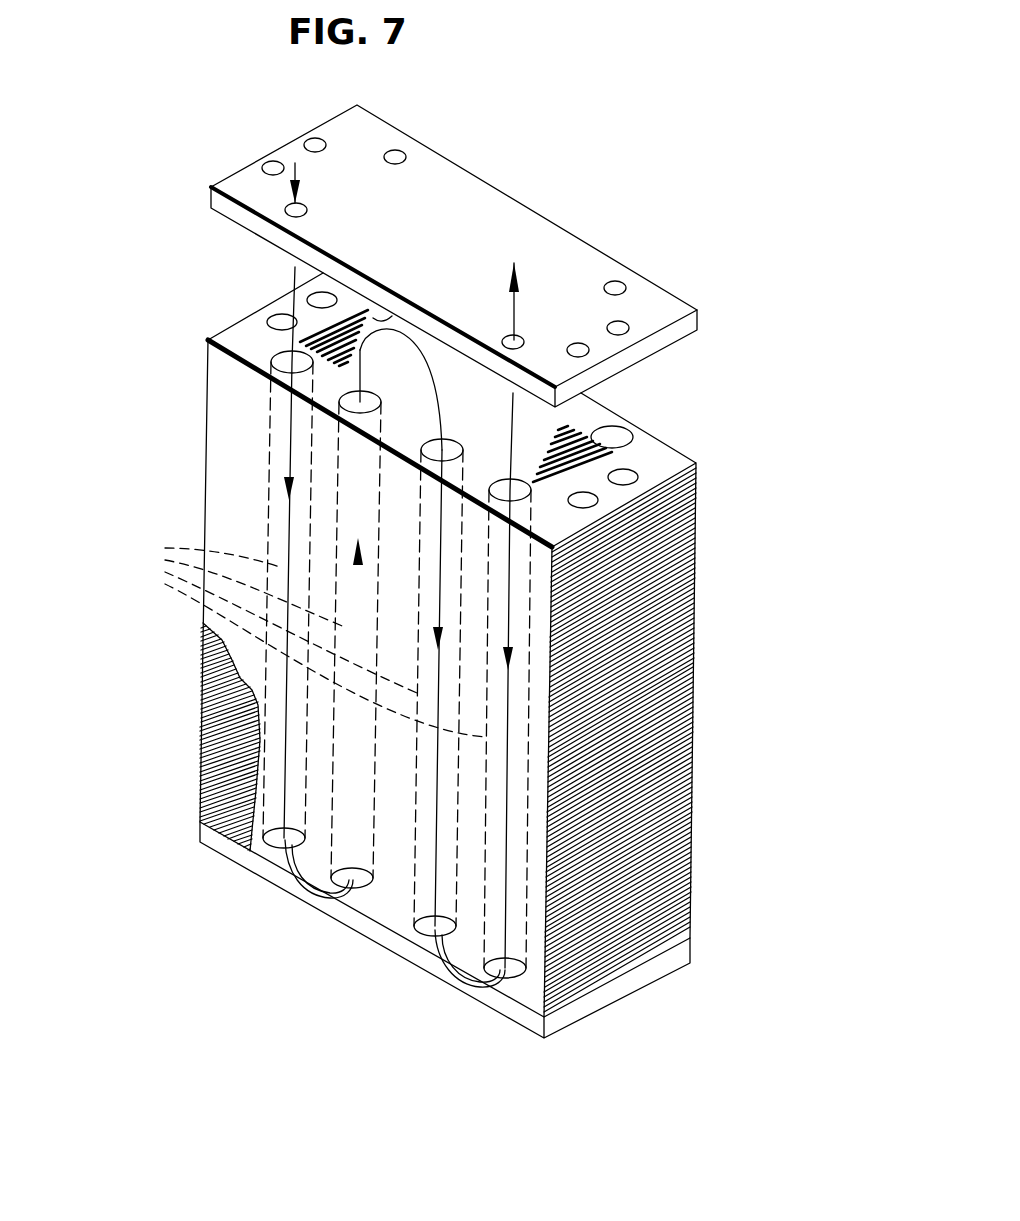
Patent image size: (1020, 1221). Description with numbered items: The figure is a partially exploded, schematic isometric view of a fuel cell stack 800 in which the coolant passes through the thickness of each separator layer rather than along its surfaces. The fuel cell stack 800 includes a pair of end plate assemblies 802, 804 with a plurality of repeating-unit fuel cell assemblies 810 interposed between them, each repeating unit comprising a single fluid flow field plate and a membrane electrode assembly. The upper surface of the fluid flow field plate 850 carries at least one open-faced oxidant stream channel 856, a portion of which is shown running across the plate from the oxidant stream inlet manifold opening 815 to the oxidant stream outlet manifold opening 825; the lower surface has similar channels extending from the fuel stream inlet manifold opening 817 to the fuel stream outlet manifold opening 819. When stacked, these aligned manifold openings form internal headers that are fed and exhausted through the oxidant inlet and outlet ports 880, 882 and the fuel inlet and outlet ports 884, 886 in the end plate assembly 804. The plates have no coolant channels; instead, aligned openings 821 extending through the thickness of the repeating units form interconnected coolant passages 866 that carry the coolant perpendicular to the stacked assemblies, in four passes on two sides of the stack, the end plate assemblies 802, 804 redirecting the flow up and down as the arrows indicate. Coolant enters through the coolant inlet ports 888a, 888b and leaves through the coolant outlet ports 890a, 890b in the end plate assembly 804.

The fuel cell stack 800 is at (552, 145).
The end plate assembly 802 is at (270, 875).
The end plate assembly 804 is at (528, 218).
The fuel cell assembly 810 is at (693, 687).
The oxidant stream inlet manifold opening 815 is at (590, 500).
The fuel stream inlet manifold opening 817 is at (630, 475).
The fuel stream outlet manifold opening 819 is at (276, 320).
The aligned openings 821 is at (502, 492).
The oxidant stream outlet manifold opening 825 is at (316, 296).
The fluid flow field plate 850 is at (260, 350).
The oxidant stream channel 856 is at (353, 312).
The coolant passages 866 is at (301, 638).
The oxidant inlet port 880 is at (588, 348).
The oxidant outlet port 882 is at (312, 140).
The fuel inlet port 884 is at (630, 328).
The fuel outlet port 886 is at (268, 165).
The coolant inlet port 888a is at (290, 211).
The coolant inlet port 888b is at (618, 283).
The coolant outlet port 890a is at (522, 341).
The coolant outlet port 890b is at (398, 150).